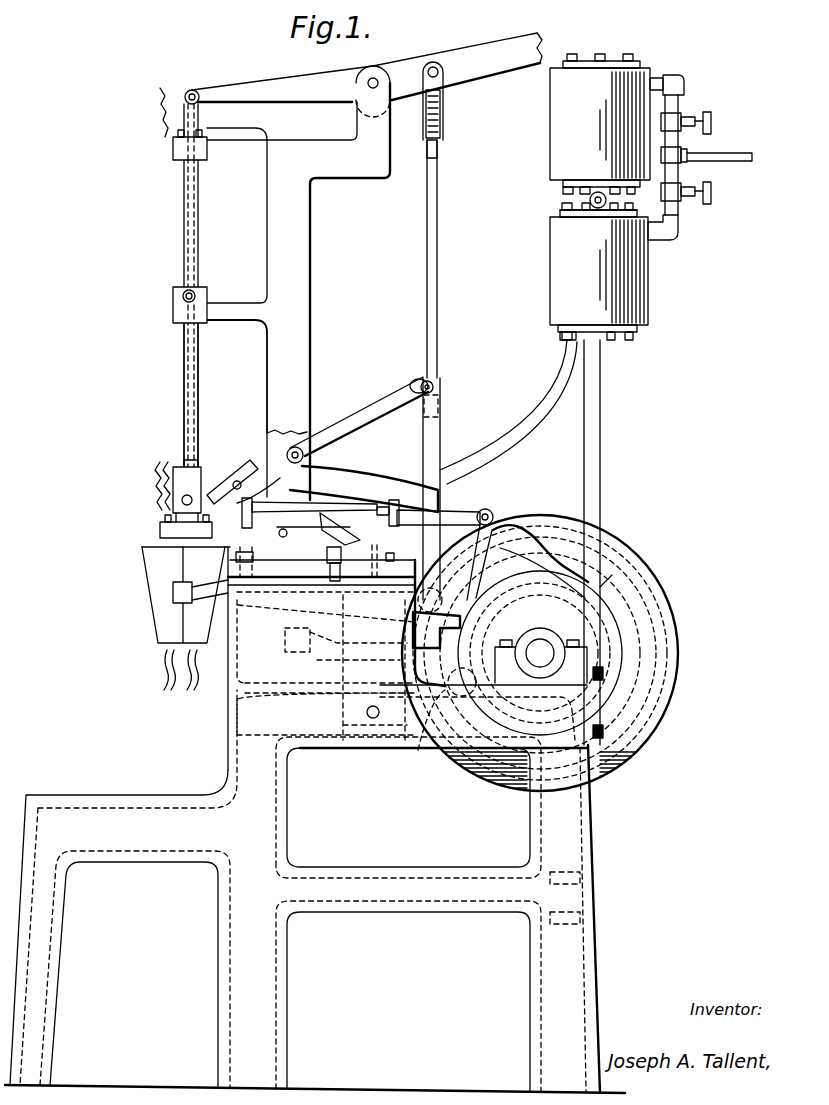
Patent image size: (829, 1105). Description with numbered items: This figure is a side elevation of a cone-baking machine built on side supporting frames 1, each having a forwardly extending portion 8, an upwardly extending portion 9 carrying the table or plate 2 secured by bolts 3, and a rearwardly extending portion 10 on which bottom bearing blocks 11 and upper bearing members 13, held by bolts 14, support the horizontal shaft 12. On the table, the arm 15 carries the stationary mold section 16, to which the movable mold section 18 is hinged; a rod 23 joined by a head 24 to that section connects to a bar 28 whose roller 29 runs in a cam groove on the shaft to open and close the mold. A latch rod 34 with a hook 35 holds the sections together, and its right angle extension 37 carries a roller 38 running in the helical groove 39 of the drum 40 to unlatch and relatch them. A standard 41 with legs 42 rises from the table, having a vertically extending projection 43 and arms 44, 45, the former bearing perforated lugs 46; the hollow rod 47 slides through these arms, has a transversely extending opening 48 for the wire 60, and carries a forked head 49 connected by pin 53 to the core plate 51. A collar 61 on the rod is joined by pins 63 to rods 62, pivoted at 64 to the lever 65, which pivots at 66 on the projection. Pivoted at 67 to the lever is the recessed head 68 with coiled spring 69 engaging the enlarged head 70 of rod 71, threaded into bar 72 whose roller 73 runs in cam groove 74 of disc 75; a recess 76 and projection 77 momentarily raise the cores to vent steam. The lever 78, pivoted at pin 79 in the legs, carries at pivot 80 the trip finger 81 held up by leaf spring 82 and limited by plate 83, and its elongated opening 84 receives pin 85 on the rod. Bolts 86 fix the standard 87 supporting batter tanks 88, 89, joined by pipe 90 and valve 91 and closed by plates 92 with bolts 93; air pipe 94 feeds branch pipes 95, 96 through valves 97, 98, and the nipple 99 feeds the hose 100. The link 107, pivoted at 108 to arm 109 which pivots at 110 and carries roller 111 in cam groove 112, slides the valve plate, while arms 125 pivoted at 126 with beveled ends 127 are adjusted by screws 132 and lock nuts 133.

The side supporting frames 1 is at (320, 915).
The table or plate 2 is at (370, 564).
The bolts 3 is at (250, 555).
The forwardly extending portion 8 is at (118, 803).
The upwardly extending portion 9 is at (228, 720).
The rearwardly extending portion 10 is at (583, 834).
The bottom bearing blocks 11 is at (518, 686).
The shaft 12 is at (540, 650).
The upper bearing members 13 is at (522, 636).
The bolts 14 is at (506, 638).
The arm 15 is at (292, 557).
The mold section 16 is at (213, 553).
The movable mold section 18 is at (163, 613).
The rod 23 is at (258, 640).
The head 24 is at (214, 645).
The bar 28 is at (312, 653).
The roller 29 is at (403, 658).
The latch rod 34 is at (210, 590).
The hook 35 is at (173, 590).
The right angle extension 37 is at (463, 643).
The roller 38 is at (462, 634).
The helical groove 39 is at (540, 653).
The drum 40 is at (613, 636).
The standard 41 is at (296, 347).
The legs 42 is at (337, 475).
The vertically extending projection 43 is at (386, 150).
The arm 44 is at (244, 152).
The arm 45 is at (230, 303).
The perforated lugs 46 is at (175, 155).
The hollow rod 47 is at (182, 265).
The transversely extending opening 48 is at (193, 465).
The forked head 49 is at (173, 477).
The core plate 51 is at (160, 530).
The pin 53 is at (181, 500).
The wire 60 is at (175, 464).
The collar 61 is at (175, 297).
The rods 62 is at (196, 258).
The pins or lugs 63 is at (183, 305).
The pivotal connection 64 is at (197, 91).
The lever 65 is at (326, 96).
The pivot 66 is at (375, 77).
The pivotal connection 67 is at (447, 70).
The recessed head 68 is at (447, 118).
The coiled spring 69 is at (450, 108).
The enlarged head 70 is at (440, 140).
The rod 71 is at (431, 245).
The bar 72 is at (441, 440).
The roller 73 is at (463, 587).
The cam groove 74 is at (658, 727).
The disc 75 is at (676, 624).
The recess 76 is at (657, 581).
The projection 77 is at (673, 597).
The lever 78 is at (365, 411).
The pin 79 is at (305, 445).
The pivot 80 is at (245, 468).
The trip finger 81 is at (224, 487).
The leaf spring 82 is at (242, 510).
The plate 83 is at (237, 467).
The elongated opening 84 is at (420, 383).
The pin 85 is at (440, 385).
The bolts 86 is at (606, 676).
The standard 87 is at (590, 477).
The batter tank 88 is at (599, 278).
The batter tank 89 is at (600, 131).
The pipe 90 is at (585, 219).
The valve 91 is at (590, 202).
The plate 92 is at (613, 63).
The bolts 93 is at (638, 63).
The pipe 94 is at (733, 162).
The branch pipe 95 is at (684, 86).
The branch pipe 96 is at (678, 226).
The valve 97 is at (711, 122).
The valve 98 is at (707, 195).
The nipple 99 is at (562, 338).
The flexible pipe or hose 100 is at (528, 422).
The link 107 is at (455, 514).
The pivotal connection 108 is at (495, 512).
The arm 109 is at (537, 545).
The pivot 110 is at (423, 747).
The roller 111 is at (452, 694).
The cam groove 112 is at (605, 582).
The arms 125 is at (376, 527).
The pivotal connection 126 is at (286, 530).
The beveled ends 127 is at (347, 520).
The screws 132 is at (333, 572).
The lock nuts 133 is at (338, 546).